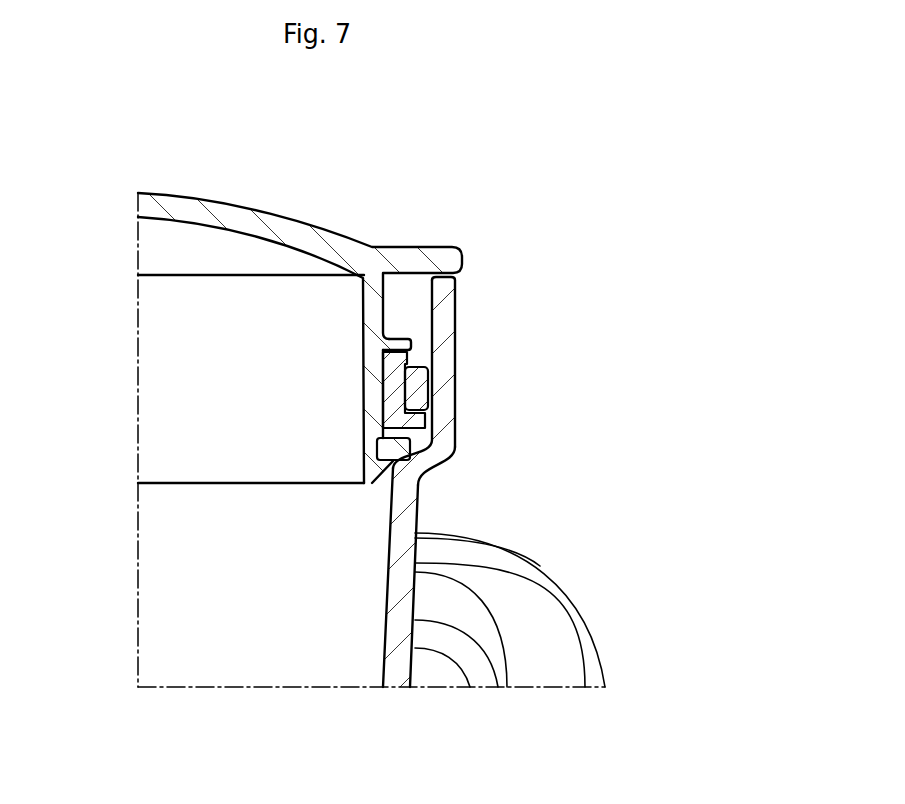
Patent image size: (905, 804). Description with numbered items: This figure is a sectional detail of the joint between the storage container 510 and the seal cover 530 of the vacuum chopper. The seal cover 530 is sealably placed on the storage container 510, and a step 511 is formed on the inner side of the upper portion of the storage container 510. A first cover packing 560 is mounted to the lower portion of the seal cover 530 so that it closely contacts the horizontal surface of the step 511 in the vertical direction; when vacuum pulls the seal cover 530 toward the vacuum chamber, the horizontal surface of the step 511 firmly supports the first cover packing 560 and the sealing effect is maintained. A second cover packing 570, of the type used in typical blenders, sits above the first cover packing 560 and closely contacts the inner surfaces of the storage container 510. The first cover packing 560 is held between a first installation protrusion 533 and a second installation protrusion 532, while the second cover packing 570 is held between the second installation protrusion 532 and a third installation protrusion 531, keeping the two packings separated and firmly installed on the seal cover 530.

The storage container 510 is at (402, 585).
The step 511 is at (431, 448).
The seal cover 530 is at (304, 238).
The third installation protrusion 531 is at (411, 345).
The second installation protrusion 532 is at (427, 425).
The first installation protrusion 533 is at (418, 497).
The first cover packing 560 is at (388, 445).
The second cover packing 570 is at (428, 379).